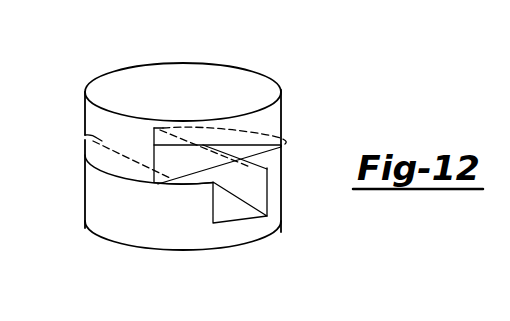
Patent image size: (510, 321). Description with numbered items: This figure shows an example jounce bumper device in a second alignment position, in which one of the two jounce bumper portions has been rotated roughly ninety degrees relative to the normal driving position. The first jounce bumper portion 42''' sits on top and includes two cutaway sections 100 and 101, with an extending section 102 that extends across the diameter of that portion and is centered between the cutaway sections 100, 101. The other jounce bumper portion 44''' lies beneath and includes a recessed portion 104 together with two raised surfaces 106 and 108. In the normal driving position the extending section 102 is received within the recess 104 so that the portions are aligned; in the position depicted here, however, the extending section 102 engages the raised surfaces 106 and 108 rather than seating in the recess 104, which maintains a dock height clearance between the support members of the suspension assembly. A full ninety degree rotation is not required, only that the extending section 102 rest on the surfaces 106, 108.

The first jounce bumper portion 42''' is at (190, 86).
The other jounce bumper portion 44''' is at (201, 222).
The cutaway section 100 is at (282, 143).
The cutaway section 101 is at (87, 135).
The extending section 102 is at (110, 165).
The recessed portion 104 is at (233, 215).
The raised surface 106 is at (165, 176).
The raised surface 108 is at (272, 158).